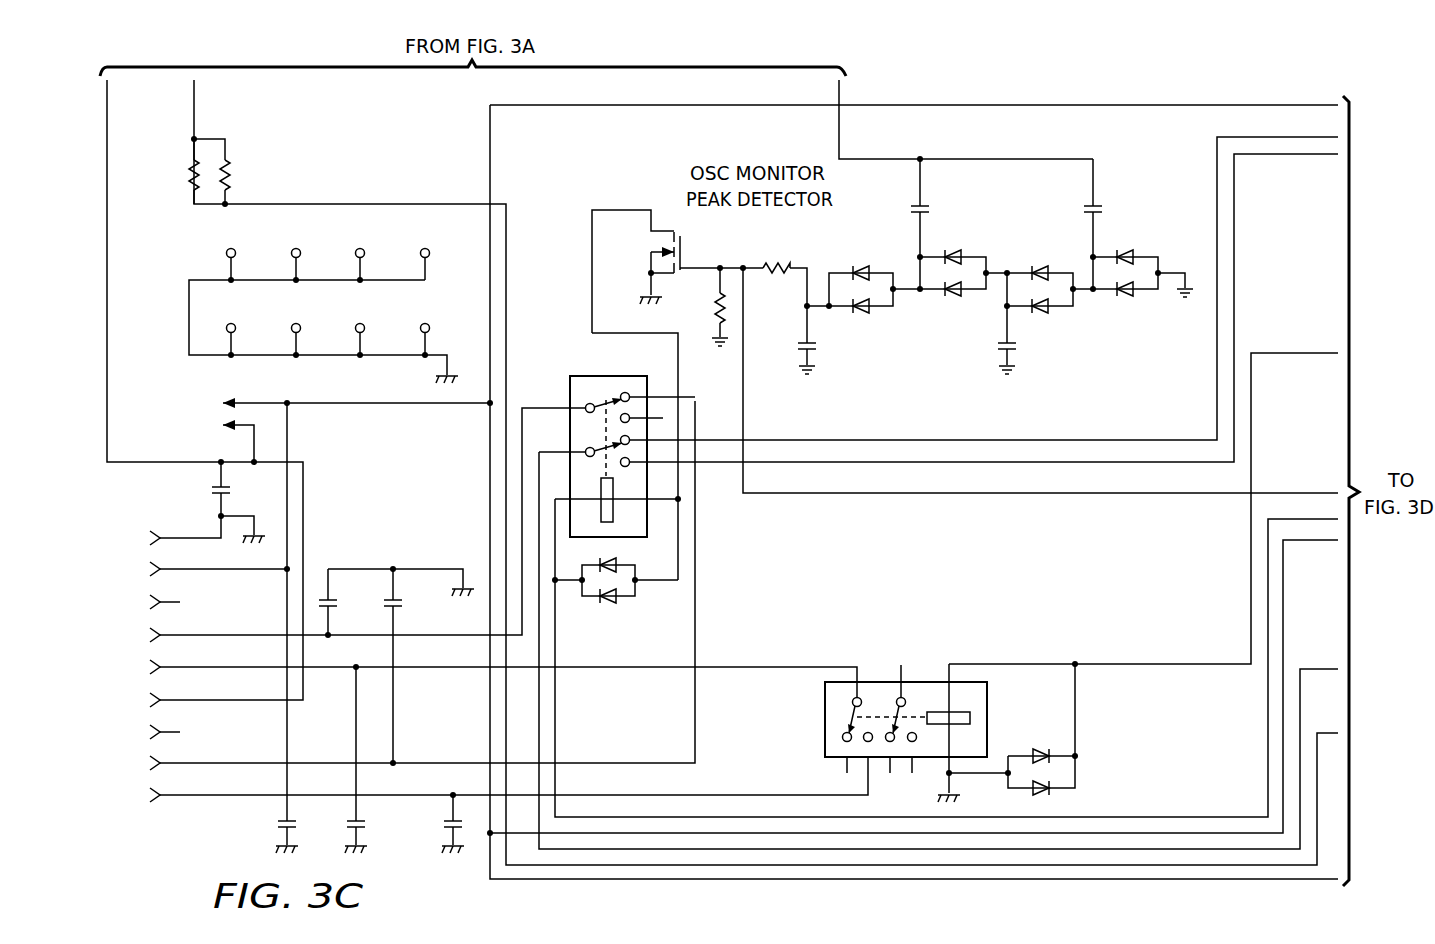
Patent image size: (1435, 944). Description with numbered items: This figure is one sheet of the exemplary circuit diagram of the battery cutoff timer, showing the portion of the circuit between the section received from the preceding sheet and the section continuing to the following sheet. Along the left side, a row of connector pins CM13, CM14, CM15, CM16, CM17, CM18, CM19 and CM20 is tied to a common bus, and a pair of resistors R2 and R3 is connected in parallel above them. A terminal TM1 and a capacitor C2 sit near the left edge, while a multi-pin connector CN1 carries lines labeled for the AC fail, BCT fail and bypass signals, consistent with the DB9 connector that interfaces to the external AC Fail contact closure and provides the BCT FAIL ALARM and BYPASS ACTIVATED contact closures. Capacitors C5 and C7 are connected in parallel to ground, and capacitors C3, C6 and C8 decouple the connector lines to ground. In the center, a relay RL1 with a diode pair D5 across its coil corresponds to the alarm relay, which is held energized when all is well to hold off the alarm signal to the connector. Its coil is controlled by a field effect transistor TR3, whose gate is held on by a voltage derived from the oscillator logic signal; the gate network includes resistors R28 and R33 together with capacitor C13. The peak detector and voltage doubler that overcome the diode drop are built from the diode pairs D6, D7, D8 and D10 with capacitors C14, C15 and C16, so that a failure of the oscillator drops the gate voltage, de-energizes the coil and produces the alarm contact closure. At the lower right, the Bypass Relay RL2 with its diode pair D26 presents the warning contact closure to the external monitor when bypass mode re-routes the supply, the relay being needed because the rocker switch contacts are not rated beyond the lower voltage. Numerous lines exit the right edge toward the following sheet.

The resistor R2 is at (179, 170).
The resistor R3 is at (225, 173).
The connector pin CM13 is at (230, 254).
The connector pin CM14 is at (230, 329).
The connector pin CM15 is at (295, 254).
The connector pin CM16 is at (295, 329).
The connector pin CM17 is at (359, 254).
The connector pin CM18 is at (359, 329).
The connector pin CM19 is at (424, 252).
The connector pin CM20 is at (424, 329).
The terminal TM1 is at (337, 431).
The capacitor C2 is at (212, 501).
The connector CN1 is at (486, 601).
The capacitor C5 is at (396, 602).
The capacitor C7 is at (407, 664).
The capacitor C3 is at (274, 833).
The capacitor C6 is at (342, 760).
The capacitor C8 is at (439, 824).
The relay RL1 is at (938, 337).
The diode pair D5 is at (615, 595).
The transistor TR3 is at (656, 395).
The resistor R28 is at (703, 305).
The resistor R33 is at (763, 291).
The capacitor C13 is at (830, 338).
The diode pair D6 is at (863, 276).
The capacitor C14 is at (900, 224).
The diode pair D7 is at (963, 260).
The diode pair D8 is at (1048, 276).
The capacitor C15 is at (987, 340).
The capacitor C16 is at (1073, 225).
The diode pair D10 is at (1143, 260).
The bypass relay RL2 is at (1061, 577).
The diode pair D26 is at (1041, 729).